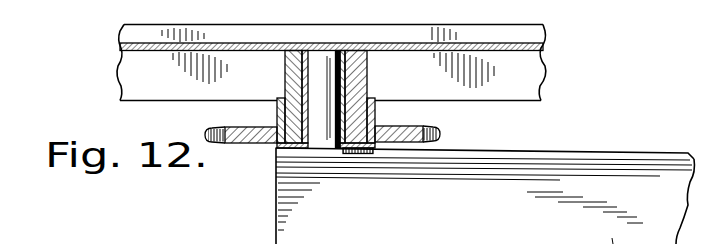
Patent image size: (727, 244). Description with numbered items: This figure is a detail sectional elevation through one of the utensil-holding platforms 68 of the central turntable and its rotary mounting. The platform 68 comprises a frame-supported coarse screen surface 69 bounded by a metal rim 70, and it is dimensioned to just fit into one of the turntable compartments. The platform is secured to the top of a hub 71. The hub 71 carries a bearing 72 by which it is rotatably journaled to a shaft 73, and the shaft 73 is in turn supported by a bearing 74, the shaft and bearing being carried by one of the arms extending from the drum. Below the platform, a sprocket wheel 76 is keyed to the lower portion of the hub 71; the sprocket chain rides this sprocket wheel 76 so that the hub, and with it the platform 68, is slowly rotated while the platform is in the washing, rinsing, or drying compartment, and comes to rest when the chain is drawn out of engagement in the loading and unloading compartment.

The platform 68 is at (96, 46).
The coarse screen surface 69 is at (232, 45).
The metal rim 70 is at (498, 68).
The hub 71 is at (366, 66).
The bearing 72 is at (352, 57).
The shaft 73 is at (321, 57).
The bearing 74 is at (356, 152).
The sprocket wheel 76 is at (418, 125).